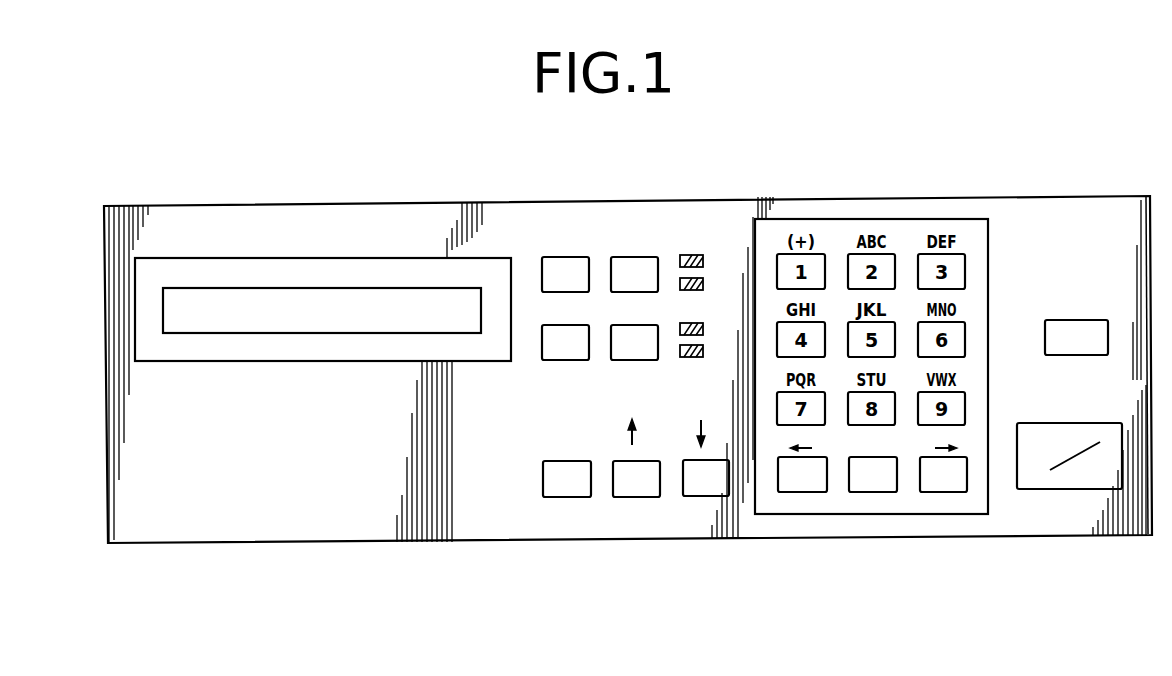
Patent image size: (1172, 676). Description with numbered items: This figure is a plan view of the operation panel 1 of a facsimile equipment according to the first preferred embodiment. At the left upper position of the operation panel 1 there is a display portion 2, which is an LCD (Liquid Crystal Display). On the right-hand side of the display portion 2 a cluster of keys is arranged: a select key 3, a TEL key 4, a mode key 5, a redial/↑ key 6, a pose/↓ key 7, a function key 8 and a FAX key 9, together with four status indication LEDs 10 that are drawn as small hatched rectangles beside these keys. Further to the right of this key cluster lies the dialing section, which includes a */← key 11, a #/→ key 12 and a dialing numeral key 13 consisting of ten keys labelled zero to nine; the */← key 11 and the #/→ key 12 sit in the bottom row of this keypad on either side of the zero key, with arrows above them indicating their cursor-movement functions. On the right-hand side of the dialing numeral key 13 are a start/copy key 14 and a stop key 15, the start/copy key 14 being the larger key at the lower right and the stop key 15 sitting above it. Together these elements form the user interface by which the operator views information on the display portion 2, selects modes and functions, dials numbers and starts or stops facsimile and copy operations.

The operation panel 1 is at (310, 512).
The display portion 2 is at (290, 300).
The select key 3 is at (545, 325).
The TEL key 4 is at (572, 497).
The mode key 5 is at (613, 325).
The redial/↑ key 6 is at (643, 497).
The pose/↓ key 7 is at (703, 496).
The function key 8 is at (564, 257).
The FAX key 9 is at (628, 257).
The status indication LEDs 10 is at (702, 350).
The */← key 11 is at (812, 492).
The #/→ key 12 is at (958, 492).
The dialing numeral key 13 is at (885, 492).
The start/copy key 14 is at (1077, 489).
The stop key 15 is at (1080, 320).